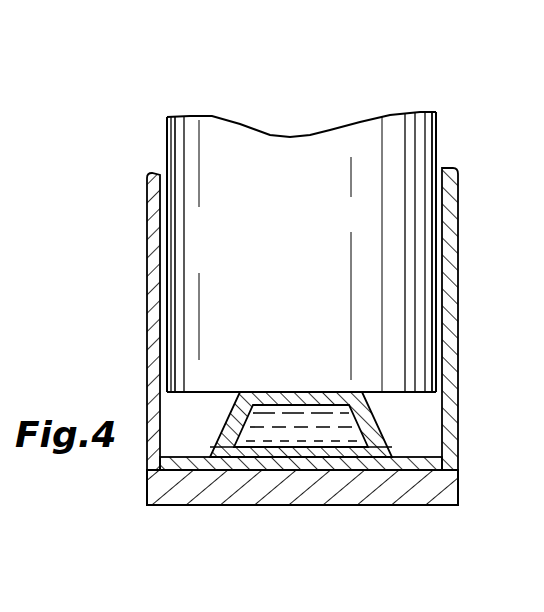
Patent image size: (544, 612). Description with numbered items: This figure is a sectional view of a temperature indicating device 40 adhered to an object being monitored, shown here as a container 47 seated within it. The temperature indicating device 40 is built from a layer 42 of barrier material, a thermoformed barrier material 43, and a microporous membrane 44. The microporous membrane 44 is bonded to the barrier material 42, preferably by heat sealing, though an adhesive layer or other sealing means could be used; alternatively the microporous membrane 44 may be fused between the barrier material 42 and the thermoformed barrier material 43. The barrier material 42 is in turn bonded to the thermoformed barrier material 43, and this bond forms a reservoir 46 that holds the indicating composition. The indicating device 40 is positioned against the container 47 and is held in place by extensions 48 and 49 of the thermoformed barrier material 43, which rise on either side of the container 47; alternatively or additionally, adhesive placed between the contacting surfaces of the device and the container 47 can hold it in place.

The temperature indicating device 40 is at (383, 77).
The layer of barrier material 42 is at (162, 483).
The thermoformed barrier material 43 is at (458, 413).
The microporous membrane 44 is at (340, 462).
The reservoir 46 is at (299, 415).
The container 47 is at (212, 130).
The extension 48 is at (452, 237).
The extension 49 is at (148, 272).